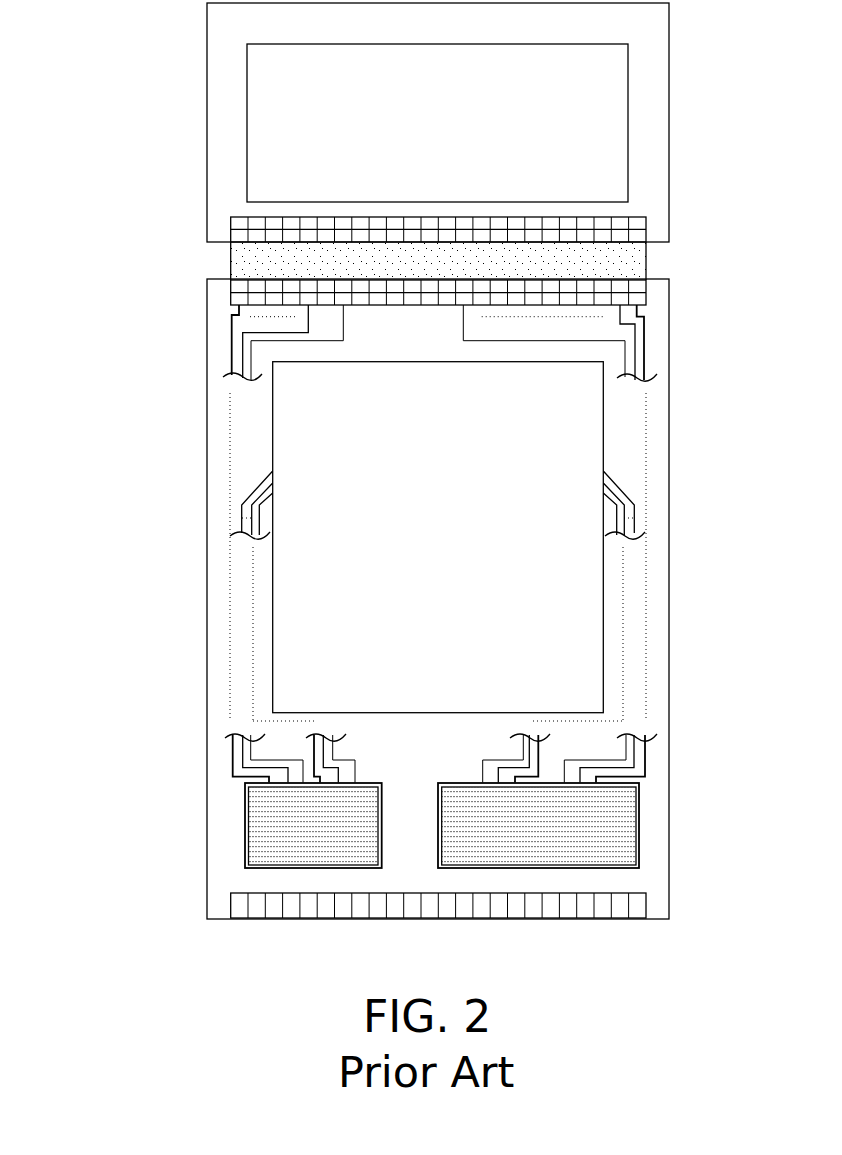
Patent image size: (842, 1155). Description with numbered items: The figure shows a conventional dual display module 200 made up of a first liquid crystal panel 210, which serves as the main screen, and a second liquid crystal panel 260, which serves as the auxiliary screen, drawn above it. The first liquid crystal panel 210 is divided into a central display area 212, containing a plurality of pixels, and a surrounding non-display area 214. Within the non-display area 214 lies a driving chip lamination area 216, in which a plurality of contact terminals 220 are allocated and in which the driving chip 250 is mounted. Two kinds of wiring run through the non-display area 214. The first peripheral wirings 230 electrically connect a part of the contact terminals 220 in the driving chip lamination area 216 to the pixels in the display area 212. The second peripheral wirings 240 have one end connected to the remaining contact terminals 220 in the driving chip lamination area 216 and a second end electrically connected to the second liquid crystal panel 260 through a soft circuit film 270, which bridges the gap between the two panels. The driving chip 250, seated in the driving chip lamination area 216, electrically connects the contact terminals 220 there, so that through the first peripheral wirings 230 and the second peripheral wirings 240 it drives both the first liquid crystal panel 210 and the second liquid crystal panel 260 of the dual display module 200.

The dual display module 200 is at (425, 486).
The first liquid crystal panel 210 is at (203, 528).
The display area 212 is at (575, 602).
The non-display area 214 is at (633, 428).
The driving chip lamination area 216 is at (246, 804).
The contact terminals 220 is at (246, 826).
The first peripheral wirings 230 is at (252, 488).
The second peripheral wirings 240 is at (242, 353).
The driving chip 250 is at (365, 835).
The second liquid crystal panel 260 is at (206, 122).
The soft circuit film 270 is at (237, 262).